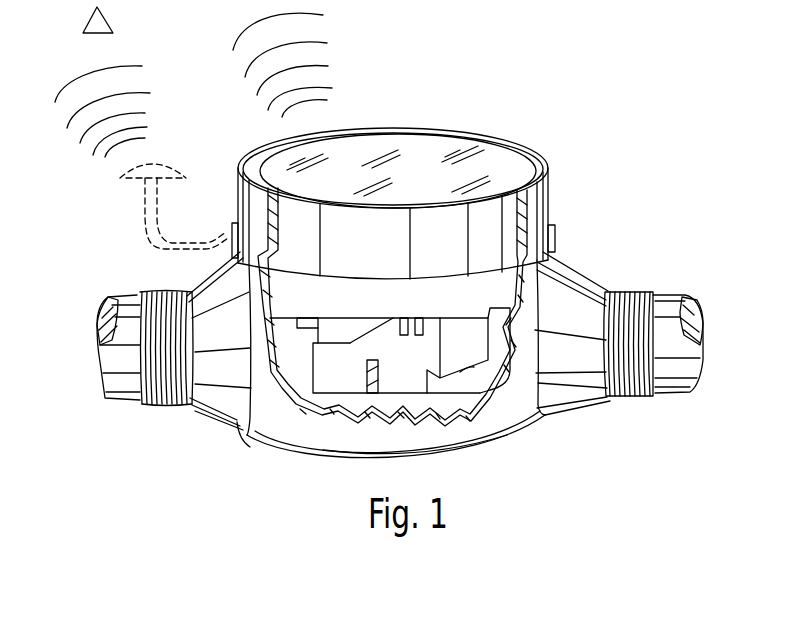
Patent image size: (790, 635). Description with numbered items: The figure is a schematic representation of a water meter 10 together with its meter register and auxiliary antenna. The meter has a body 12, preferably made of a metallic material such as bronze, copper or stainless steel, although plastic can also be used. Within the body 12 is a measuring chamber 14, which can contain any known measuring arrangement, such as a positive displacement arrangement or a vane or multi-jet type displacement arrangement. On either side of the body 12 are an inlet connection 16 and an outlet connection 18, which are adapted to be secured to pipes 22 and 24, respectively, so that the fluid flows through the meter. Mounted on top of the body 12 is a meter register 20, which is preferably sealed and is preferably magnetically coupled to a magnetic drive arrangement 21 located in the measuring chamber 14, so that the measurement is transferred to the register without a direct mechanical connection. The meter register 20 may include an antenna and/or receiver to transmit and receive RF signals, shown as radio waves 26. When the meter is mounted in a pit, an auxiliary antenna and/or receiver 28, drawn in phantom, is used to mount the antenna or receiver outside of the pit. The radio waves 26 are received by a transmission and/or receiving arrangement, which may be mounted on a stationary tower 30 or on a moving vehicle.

The water meter 10 is at (212, 440).
The body 12 is at (567, 407).
The measuring chamber 14 is at (474, 367).
The inlet connection 16 is at (203, 284).
The outlet connection 18 is at (600, 283).
The meter register 20 is at (490, 247).
The magnetic drive arrangement 21 is at (336, 377).
The pipe 22 is at (126, 405).
The pipe 24 is at (687, 393).
The radio waves 26 is at (140, 112).
The auxiliary antenna and/or receiver 28 is at (147, 200).
The stationary tower 30 is at (114, 24).